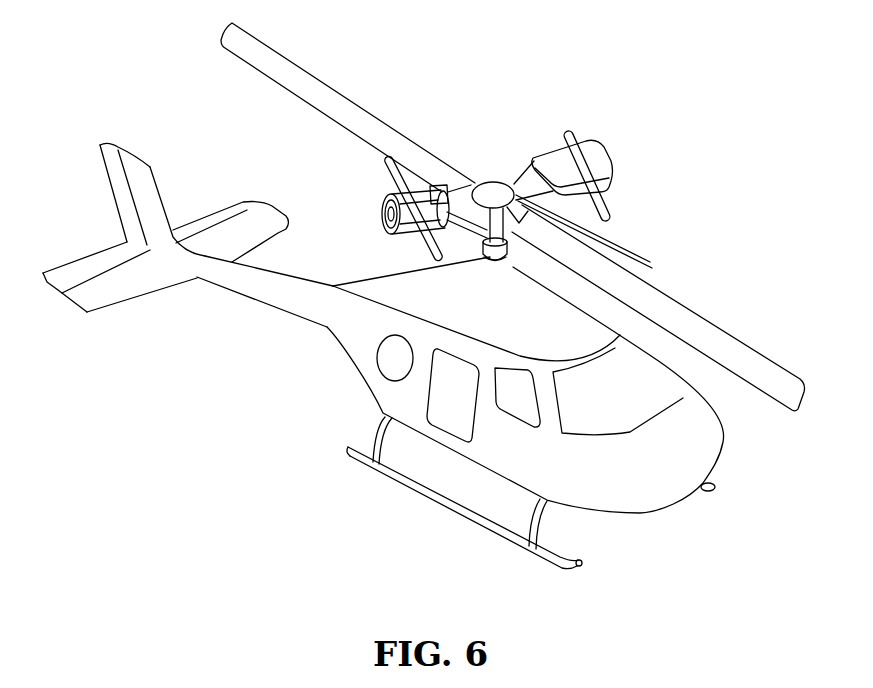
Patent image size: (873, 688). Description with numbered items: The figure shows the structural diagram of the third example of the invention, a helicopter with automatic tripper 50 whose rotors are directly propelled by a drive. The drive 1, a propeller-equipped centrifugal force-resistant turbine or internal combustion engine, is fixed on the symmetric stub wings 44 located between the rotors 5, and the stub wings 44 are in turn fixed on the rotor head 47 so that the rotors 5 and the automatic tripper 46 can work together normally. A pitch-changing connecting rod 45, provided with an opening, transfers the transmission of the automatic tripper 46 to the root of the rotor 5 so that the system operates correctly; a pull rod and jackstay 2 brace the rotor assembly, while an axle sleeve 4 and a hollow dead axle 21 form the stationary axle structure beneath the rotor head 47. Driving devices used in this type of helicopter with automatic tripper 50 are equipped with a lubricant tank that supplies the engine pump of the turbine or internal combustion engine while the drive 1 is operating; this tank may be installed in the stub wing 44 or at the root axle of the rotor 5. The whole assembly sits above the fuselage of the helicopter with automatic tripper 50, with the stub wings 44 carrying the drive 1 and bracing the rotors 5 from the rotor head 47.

The drive 1 is at (533, 158).
The pull rod and jackstay 2 is at (730, 322).
The axle sleeve 4 is at (487, 235).
The rotor 5 is at (323, 87).
The hollow dead axle 21 is at (490, 254).
The stub wing 44 is at (652, 268).
The pitch-changing connecting rod 45 is at (505, 247).
The automatic tripper 46 is at (495, 262).
The rotor head 47 is at (493, 193).
The helicopter with automatic tripper 50 is at (642, 469).